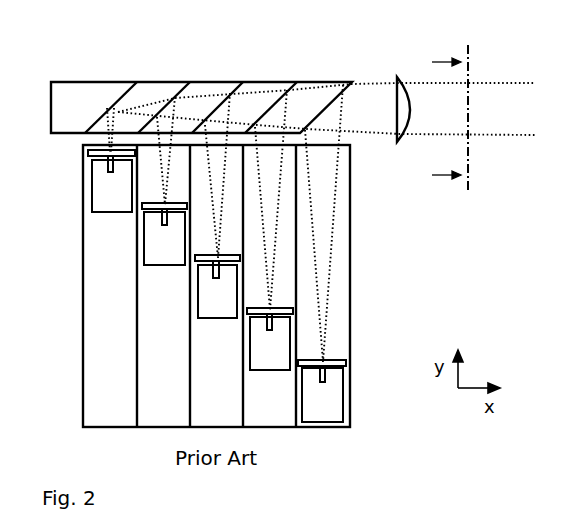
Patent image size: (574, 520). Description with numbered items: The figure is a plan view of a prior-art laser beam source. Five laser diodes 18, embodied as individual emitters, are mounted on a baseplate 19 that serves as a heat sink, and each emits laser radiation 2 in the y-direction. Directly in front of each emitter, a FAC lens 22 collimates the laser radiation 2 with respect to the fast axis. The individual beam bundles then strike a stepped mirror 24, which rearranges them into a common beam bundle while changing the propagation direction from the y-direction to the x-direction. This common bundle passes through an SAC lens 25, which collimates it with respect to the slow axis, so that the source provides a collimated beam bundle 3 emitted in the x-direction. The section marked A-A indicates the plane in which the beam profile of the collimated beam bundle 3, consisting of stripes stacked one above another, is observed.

The stepped mirror 24 is at (201, 91).
The SAC lens 25 is at (349, 95).
The collimated beam bundle 3 is at (461, 119).
The laser radiation 2 is at (321, 222).
The baseplate 19 is at (260, 286).
The FAC lens 22 is at (361, 347).
The laser diode 18 is at (354, 394).